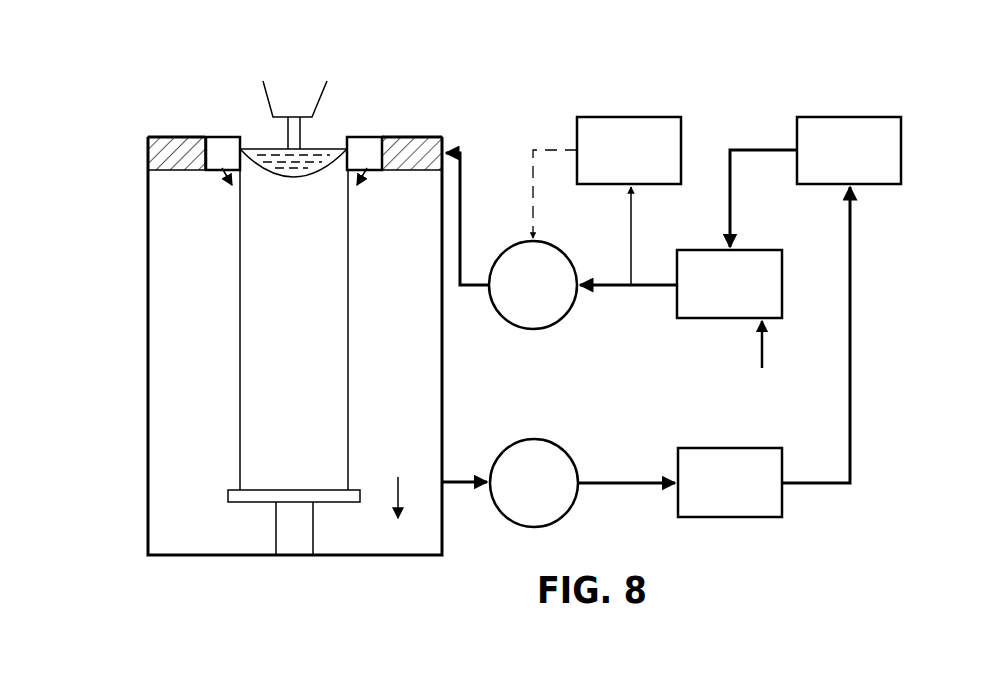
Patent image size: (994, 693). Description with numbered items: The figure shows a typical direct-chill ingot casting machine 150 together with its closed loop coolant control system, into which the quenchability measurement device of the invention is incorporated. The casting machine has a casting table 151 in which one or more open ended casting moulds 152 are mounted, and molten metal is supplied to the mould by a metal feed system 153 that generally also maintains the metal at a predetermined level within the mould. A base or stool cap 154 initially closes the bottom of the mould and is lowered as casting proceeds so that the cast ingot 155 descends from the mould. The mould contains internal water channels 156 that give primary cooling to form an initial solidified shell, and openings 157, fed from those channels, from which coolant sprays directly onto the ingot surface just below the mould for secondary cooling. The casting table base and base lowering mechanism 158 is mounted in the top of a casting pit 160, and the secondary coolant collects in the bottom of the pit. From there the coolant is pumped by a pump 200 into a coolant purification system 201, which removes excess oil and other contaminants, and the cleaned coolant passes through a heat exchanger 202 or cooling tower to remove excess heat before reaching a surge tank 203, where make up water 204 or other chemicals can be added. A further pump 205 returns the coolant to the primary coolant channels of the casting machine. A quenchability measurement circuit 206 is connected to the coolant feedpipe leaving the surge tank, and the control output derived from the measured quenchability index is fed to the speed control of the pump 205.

The DC ingot casting machine 150 is at (153, 117).
The casting table 151 is at (170, 153).
The casting mould 152 is at (362, 132).
The metal feed system 153 is at (290, 98).
The stool cap 154 is at (253, 498).
The cast ingot 155 is at (323, 325).
The internal water channels 156 is at (223, 152).
The openings 157 is at (220, 172).
The base lowering mechanism 158 is at (307, 530).
The casting pit 160 is at (147, 452).
The pump 200 is at (506, 498).
The coolant purification system 201 is at (702, 497).
The heat exchanger 202 is at (821, 166).
The surge tank 203 is at (702, 299).
The make up water 204 is at (795, 347).
The pump 205 is at (505, 300).
The quenchability measurement circuit 206 is at (601, 166).